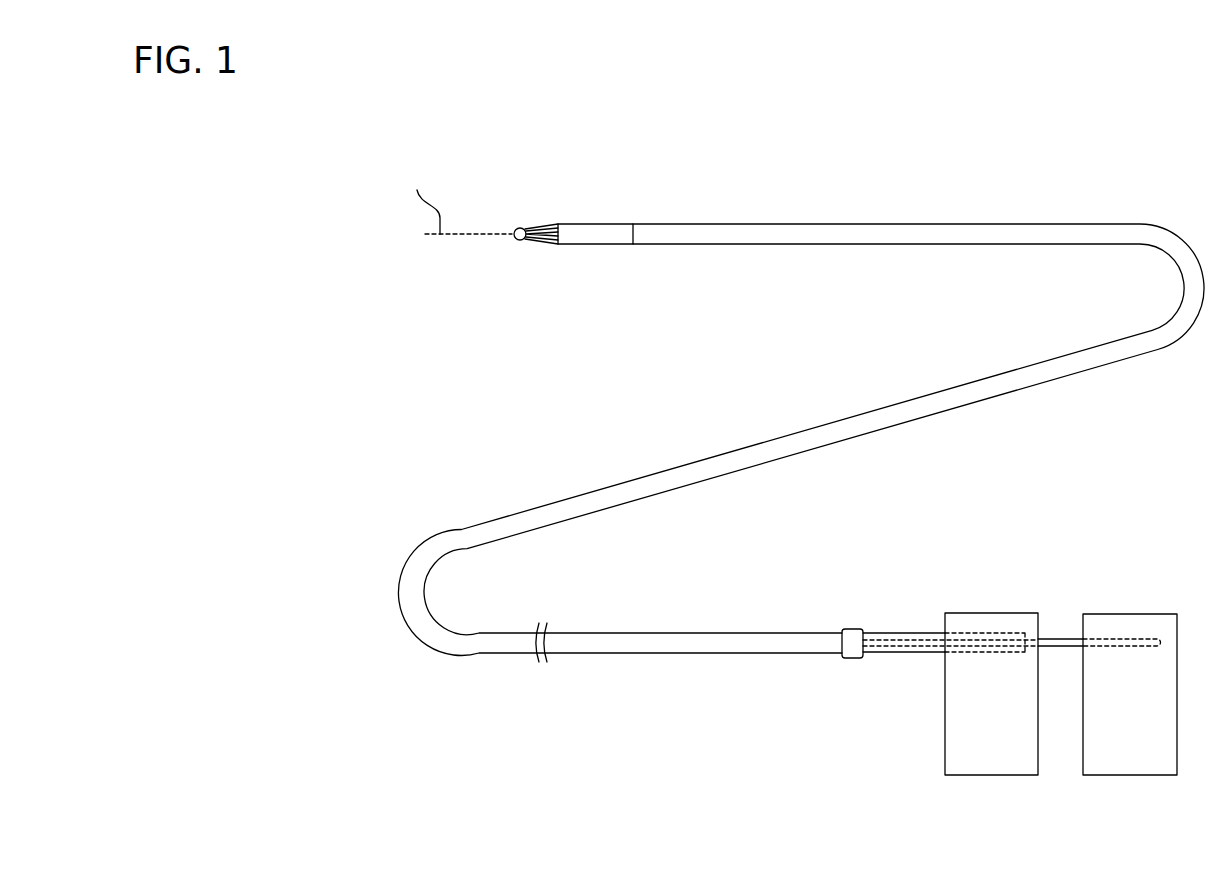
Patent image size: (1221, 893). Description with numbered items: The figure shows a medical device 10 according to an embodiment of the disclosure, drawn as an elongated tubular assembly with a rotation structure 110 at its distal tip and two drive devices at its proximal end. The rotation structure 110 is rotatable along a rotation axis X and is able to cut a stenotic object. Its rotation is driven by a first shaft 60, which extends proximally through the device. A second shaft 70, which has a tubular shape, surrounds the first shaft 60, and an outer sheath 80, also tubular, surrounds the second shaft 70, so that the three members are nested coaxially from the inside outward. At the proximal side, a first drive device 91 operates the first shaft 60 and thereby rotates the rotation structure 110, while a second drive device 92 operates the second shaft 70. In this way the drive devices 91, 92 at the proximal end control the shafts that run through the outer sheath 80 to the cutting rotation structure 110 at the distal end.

The medical device 10 is at (968, 144).
The rotation structure 110 is at (535, 216).
The second shaft 70 is at (595, 243).
The outer sheath 80 is at (723, 236).
The first shaft 60 is at (1059, 640).
The second drive device 92 is at (986, 613).
The first drive device 91 is at (1126, 614).